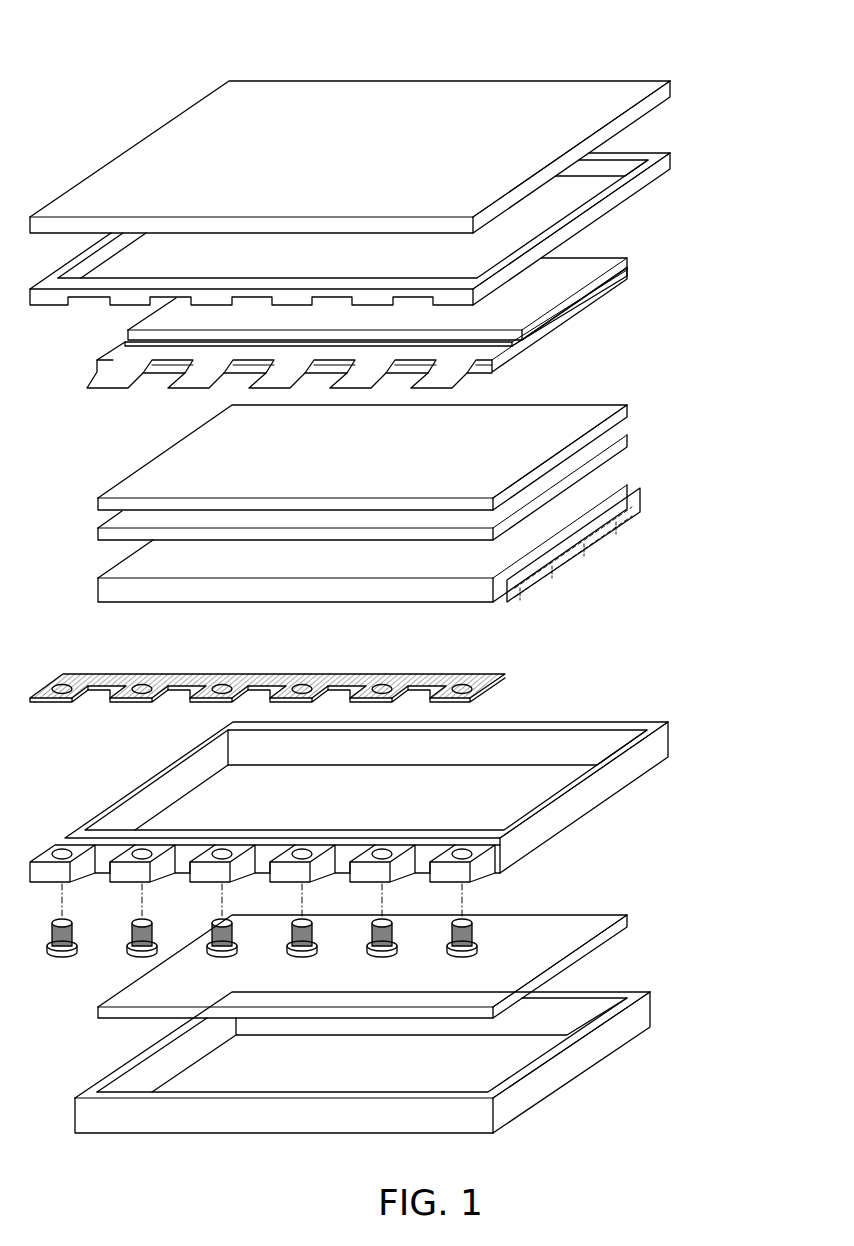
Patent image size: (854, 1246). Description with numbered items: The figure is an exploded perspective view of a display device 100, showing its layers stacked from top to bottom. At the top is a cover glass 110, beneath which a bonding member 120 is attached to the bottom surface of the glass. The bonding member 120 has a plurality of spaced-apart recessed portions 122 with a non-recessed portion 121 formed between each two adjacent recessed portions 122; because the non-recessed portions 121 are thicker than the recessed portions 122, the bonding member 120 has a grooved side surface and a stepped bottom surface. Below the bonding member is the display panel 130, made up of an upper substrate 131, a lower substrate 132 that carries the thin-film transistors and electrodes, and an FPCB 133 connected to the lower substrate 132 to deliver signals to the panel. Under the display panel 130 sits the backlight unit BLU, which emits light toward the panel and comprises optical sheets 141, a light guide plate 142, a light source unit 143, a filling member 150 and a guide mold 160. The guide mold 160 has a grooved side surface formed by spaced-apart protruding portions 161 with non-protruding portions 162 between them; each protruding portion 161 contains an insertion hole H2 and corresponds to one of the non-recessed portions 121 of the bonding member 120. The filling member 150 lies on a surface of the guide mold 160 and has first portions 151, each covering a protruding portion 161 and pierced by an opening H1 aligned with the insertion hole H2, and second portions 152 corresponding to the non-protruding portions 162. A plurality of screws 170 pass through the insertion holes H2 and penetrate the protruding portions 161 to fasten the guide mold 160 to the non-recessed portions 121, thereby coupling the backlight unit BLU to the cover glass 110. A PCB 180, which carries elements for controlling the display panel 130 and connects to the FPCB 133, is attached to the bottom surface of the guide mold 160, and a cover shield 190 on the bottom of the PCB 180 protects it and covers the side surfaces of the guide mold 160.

The display device 100 is at (668, 40).
The cover glass 110 is at (664, 93).
The bonding member 120 is at (410, 235).
The non-recessed portions 121 is at (413, 293).
The recessed portions 122 is at (453, 300).
The display panel 130 is at (439, 328).
The upper substrate 131 is at (535, 328).
The lower substrate 132 is at (515, 353).
The FPCB 133 is at (443, 378).
The optical sheets 141 is at (622, 415).
The light guide plate 142 is at (627, 437).
The light source unit 143 is at (603, 494).
The filling member 150 is at (382, 668).
The first portions 151 is at (478, 701).
The second portions 152 is at (436, 675).
The opening H1 is at (468, 689).
The guide mold 160 is at (382, 819).
The protruding portions 161 is at (460, 868).
The non-protruding portions 162 is at (462, 836).
The insertion hole H2 is at (462, 855).
The screws 170 is at (475, 935).
The PCB 180 is at (560, 968).
The cover shield 190 is at (637, 1015).
The backlight unit BLU is at (414, 660).